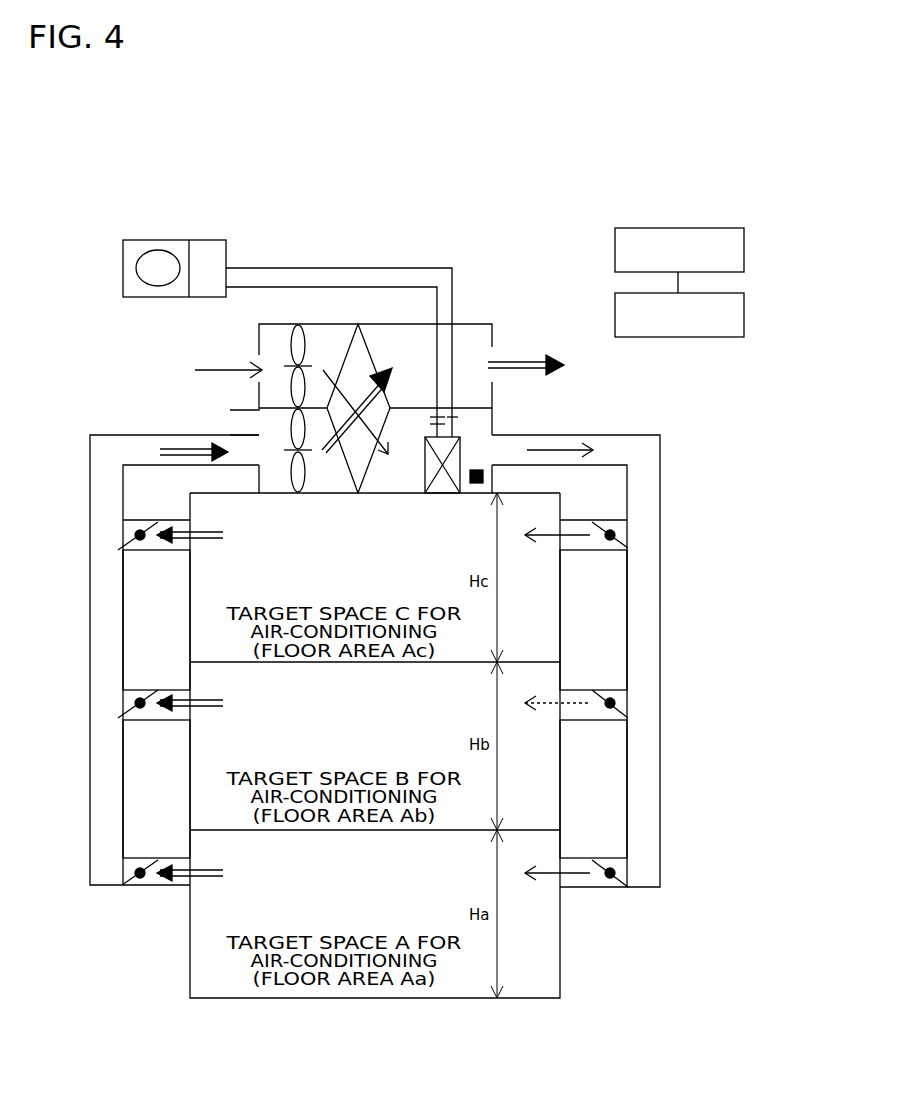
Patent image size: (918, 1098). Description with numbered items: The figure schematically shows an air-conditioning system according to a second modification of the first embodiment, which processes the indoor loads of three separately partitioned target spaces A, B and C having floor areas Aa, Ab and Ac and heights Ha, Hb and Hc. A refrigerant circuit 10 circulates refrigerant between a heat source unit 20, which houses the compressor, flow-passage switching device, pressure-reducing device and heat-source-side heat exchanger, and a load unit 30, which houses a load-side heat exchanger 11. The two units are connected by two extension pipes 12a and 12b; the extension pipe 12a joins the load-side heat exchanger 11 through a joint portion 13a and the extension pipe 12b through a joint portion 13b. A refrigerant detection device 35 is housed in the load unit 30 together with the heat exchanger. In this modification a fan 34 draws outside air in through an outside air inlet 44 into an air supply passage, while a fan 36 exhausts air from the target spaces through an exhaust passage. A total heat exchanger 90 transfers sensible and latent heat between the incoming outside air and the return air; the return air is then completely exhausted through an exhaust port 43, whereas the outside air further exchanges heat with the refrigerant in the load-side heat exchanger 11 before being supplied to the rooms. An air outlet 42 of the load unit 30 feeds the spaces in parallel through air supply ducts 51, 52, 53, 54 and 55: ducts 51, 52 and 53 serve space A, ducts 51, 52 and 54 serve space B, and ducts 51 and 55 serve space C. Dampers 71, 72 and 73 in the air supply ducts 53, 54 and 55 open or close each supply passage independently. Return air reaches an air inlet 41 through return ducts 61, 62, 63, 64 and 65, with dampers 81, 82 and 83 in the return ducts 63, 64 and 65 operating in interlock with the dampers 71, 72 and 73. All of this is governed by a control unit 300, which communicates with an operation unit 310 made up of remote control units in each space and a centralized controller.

The refrigerant circuit 10 is at (410, 256).
The heat source unit 20 is at (173, 297).
The load unit 30 is at (493, 342).
The extension pipe 12a is at (327, 268).
The extension pipe 12b is at (290, 285).
The load-side heat exchanger 11 is at (422, 493).
The joint portion 13a is at (465, 412).
The joint portion 13b is at (434, 402).
The fan 34 is at (293, 345).
The fan 36 is at (290, 493).
The refrigerant detection device 35 is at (472, 493).
The air inlet 41 is at (254, 452).
The air outlet 42 is at (486, 470).
The exhaust port 43 is at (497, 358).
The outside air inlet 44 is at (258, 356).
The total heat exchanger 90 is at (378, 347).
The air supply duct 51 is at (606, 435).
The air supply duct 52 is at (660, 614).
The air supply duct 53 is at (660, 794).
The air supply duct 54 is at (590, 722).
The air supply duct 55 is at (590, 553).
The return duct 61 is at (146, 435).
The return duct 62 is at (90, 614).
The return duct 63 is at (90, 794).
The return duct 64 is at (148, 722).
The return duct 65 is at (148, 553).
The damper 71 is at (611, 866).
The damper 72 is at (611, 696).
The damper 73 is at (611, 528).
The damper 81 is at (146, 866).
The damper 82 is at (146, 696).
The damper 83 is at (146, 528).
The control unit 300 is at (745, 248).
The operation unit 310 is at (745, 313).